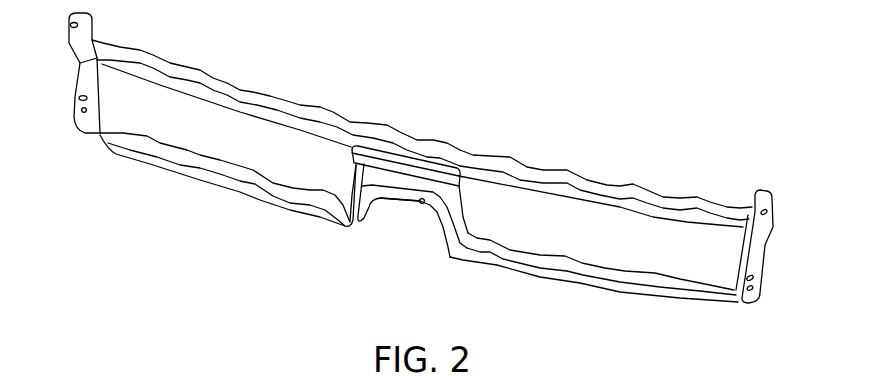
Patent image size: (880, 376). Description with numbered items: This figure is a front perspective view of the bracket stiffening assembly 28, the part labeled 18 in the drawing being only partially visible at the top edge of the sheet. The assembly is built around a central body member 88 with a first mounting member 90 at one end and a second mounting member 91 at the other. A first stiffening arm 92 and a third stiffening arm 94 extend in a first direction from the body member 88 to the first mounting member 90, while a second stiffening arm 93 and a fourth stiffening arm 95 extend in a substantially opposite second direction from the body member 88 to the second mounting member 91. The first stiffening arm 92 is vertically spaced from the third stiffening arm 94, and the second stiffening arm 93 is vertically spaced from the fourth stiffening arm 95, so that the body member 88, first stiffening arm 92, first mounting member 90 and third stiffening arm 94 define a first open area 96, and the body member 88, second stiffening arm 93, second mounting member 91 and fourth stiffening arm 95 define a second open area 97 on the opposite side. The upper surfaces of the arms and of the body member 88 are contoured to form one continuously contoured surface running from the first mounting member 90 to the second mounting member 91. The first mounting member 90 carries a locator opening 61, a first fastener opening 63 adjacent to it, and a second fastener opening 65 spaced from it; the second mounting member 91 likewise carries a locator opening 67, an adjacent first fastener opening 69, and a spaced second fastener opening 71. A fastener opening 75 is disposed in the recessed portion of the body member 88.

The bumper assembly 18 is at (670, 6).
The bracket stiffening assembly 28 is at (452, 258).
The locator opening 61 is at (61, 84).
The first fastener opening 63 is at (82, 132).
The second fastener opening 65 is at (57, 17).
The locator opening 67 is at (773, 264).
The first fastener opening 69 is at (775, 284).
The second fastener opening 71 is at (780, 190).
The fastener opening 75 is at (414, 225).
The body member 88 is at (395, 234).
The first mounting member 90 is at (69, 90).
The second mounting member 91 is at (758, 272).
The first stiffening arm 92 is at (276, 97).
The second stiffening arm 93 is at (606, 174).
The third stiffening arm 94 is at (228, 179).
The fourth stiffening arm 95 is at (594, 294).
The first open area 96 is at (226, 143).
The second open area 97 is at (601, 246).